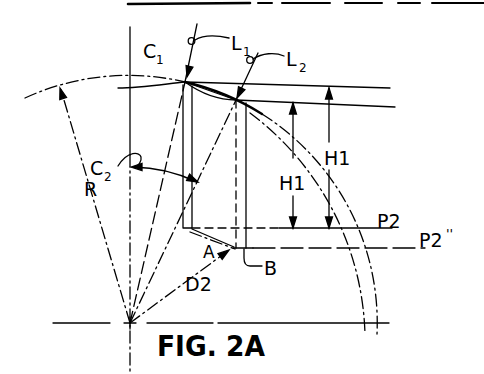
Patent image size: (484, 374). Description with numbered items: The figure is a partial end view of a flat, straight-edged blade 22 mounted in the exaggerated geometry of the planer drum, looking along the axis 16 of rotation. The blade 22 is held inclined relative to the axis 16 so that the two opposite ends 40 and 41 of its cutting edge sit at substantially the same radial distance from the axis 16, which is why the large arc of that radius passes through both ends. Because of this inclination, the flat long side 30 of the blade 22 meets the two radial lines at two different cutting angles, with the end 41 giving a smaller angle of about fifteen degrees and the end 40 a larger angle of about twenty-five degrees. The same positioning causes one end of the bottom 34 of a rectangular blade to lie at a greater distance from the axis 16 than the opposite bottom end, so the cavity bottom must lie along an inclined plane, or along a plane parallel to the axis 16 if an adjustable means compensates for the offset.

The axis of rotation 16 is at (125, 320).
The blade 22 is at (186, 123).
The long side 30 is at (129, 50).
The bottom 34 is at (185, 233).
The end of the cutting edge 40 is at (248, 81).
The end of the cutting edge 41 is at (234, 66).